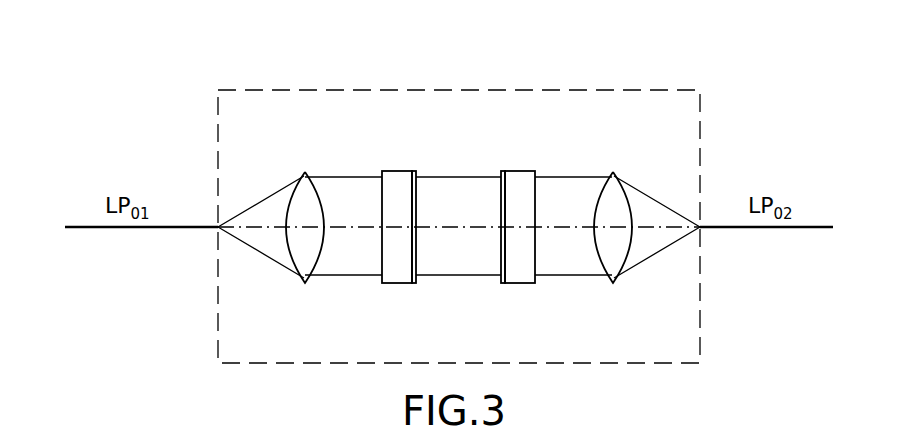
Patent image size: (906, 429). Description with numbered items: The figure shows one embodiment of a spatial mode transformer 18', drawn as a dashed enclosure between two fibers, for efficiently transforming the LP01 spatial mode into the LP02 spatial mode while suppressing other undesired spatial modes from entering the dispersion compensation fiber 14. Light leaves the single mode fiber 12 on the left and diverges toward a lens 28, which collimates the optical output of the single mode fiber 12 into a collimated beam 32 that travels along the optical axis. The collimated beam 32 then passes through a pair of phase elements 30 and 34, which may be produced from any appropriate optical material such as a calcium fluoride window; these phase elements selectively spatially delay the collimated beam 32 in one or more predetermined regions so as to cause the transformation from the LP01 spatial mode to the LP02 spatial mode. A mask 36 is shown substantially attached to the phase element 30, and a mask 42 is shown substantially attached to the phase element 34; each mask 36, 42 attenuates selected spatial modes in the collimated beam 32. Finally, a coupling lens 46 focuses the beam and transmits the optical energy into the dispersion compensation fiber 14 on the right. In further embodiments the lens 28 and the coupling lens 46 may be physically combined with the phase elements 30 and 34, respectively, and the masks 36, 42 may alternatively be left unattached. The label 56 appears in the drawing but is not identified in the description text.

The single mode fiber 12 is at (138, 228).
The dispersion compensation fiber 14 is at (758, 227).
The spatial mode transformer 18' is at (459, 204).
The lens 28 is at (303, 172).
The phase element 30 is at (399, 171).
The collimated beam 32 is at (357, 262).
The phase element 34 is at (522, 171).
The mask 36 is at (416, 187).
The mask 42 is at (500, 252).
The coupling lens 46 is at (613, 172).
The diverging beam 56 is at (268, 230).